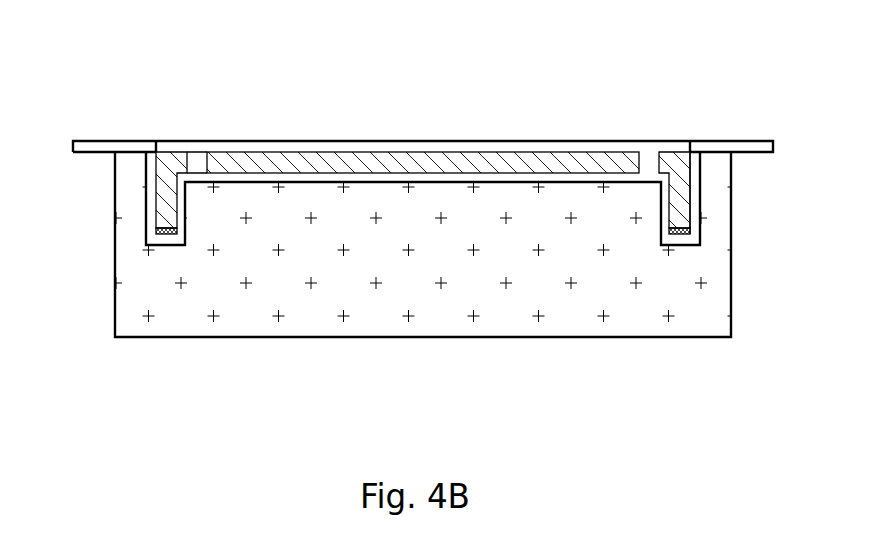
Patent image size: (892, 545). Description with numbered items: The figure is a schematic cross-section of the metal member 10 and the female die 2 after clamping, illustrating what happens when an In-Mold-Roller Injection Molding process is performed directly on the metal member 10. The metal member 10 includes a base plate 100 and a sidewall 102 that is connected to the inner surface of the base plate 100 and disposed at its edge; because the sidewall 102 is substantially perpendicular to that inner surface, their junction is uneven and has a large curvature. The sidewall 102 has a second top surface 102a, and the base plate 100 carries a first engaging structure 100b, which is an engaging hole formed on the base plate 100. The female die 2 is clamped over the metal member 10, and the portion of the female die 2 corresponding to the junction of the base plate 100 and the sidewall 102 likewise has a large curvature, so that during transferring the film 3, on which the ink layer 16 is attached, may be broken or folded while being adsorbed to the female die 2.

The female die 2 is at (115, 248).
The film 3 is at (113, 140).
The metal member 10 is at (458, 130).
The base plate 100 is at (617, 152).
The first engaging structure 100b is at (197, 137).
The sidewall 102 is at (681, 202).
The second top surface 102a is at (693, 218).
The ink layer 16 is at (166, 235).